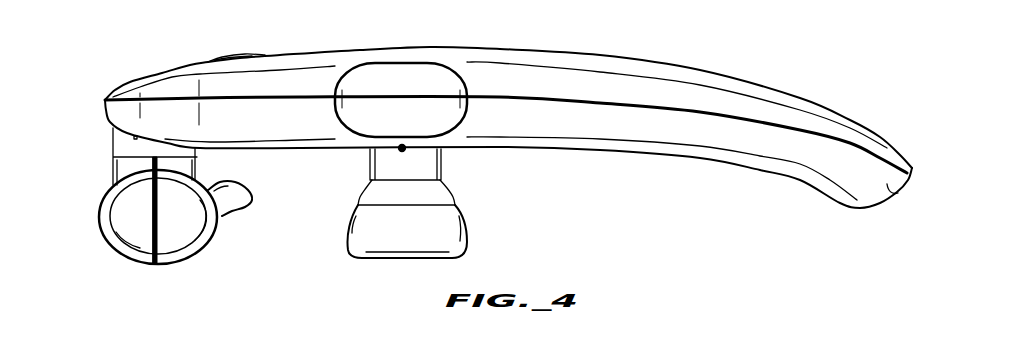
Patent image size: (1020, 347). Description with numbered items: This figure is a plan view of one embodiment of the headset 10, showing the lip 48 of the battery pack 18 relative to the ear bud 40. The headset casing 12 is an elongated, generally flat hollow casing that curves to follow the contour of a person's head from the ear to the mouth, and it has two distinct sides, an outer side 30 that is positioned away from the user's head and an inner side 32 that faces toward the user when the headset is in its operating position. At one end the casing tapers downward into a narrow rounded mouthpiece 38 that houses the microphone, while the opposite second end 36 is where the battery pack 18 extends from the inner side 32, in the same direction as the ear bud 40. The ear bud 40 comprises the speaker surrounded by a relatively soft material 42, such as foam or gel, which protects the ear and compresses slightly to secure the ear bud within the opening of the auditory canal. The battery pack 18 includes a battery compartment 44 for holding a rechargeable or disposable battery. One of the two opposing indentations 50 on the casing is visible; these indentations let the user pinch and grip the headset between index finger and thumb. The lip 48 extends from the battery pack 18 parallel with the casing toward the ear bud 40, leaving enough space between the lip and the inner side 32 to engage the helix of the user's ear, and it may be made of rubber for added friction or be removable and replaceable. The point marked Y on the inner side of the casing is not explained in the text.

The headset 10 is at (516, 128).
The headset casing 12 is at (760, 83).
The battery pack 18 is at (139, 227).
The outer side 30 is at (593, 92).
The inner side 32 is at (594, 127).
The second end 36 is at (922, 180).
The mouthpiece 38 is at (812, 185).
The ear bud 40 is at (451, 203).
The soft material 42 is at (466, 203).
The battery compartment 44 is at (193, 245).
The lip 48 is at (234, 195).
The indentation 50 is at (388, 80).
The pivot point Y is at (404, 150).